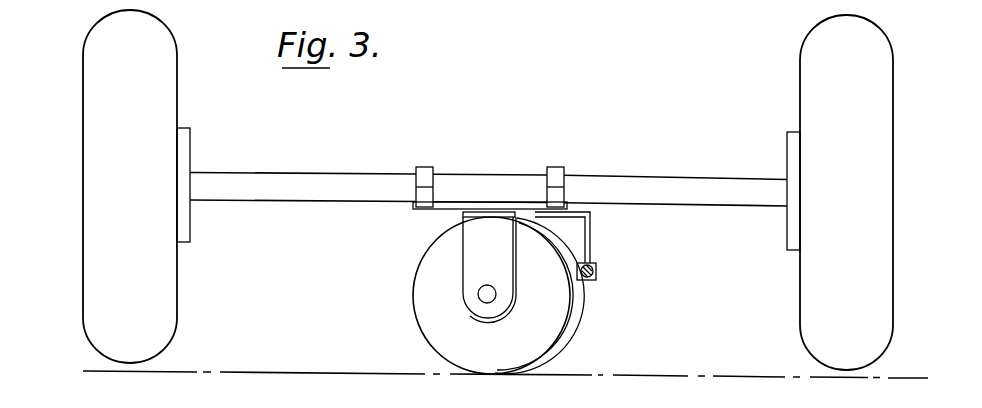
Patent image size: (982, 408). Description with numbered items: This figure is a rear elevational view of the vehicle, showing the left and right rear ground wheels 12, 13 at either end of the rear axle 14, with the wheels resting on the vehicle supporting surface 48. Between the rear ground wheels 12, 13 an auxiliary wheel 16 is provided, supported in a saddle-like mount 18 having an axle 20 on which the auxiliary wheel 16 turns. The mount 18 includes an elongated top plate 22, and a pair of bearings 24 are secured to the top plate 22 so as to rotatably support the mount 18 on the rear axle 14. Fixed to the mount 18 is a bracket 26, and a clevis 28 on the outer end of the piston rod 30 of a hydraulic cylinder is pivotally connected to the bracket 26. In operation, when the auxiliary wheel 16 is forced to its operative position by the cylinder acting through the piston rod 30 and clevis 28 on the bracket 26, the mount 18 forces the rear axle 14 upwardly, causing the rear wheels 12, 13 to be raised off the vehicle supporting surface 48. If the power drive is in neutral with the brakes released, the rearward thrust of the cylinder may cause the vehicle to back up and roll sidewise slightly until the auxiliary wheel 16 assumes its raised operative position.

The left rear ground wheel 12 is at (83, 137).
The right rear ground wheel 13 is at (893, 136).
The rear axle 14 is at (258, 173).
The auxiliary wheel 16 is at (520, 295).
The saddle-like mount 18 is at (460, 270).
The axle 20 is at (479, 293).
The elongated top plate 22 is at (419, 209).
The bearings 24 is at (432, 169).
The bracket 26 is at (590, 228).
The clevis 28 is at (597, 265).
The piston rod 30 is at (588, 281).
The vehicle supporting surface 48 is at (688, 373).